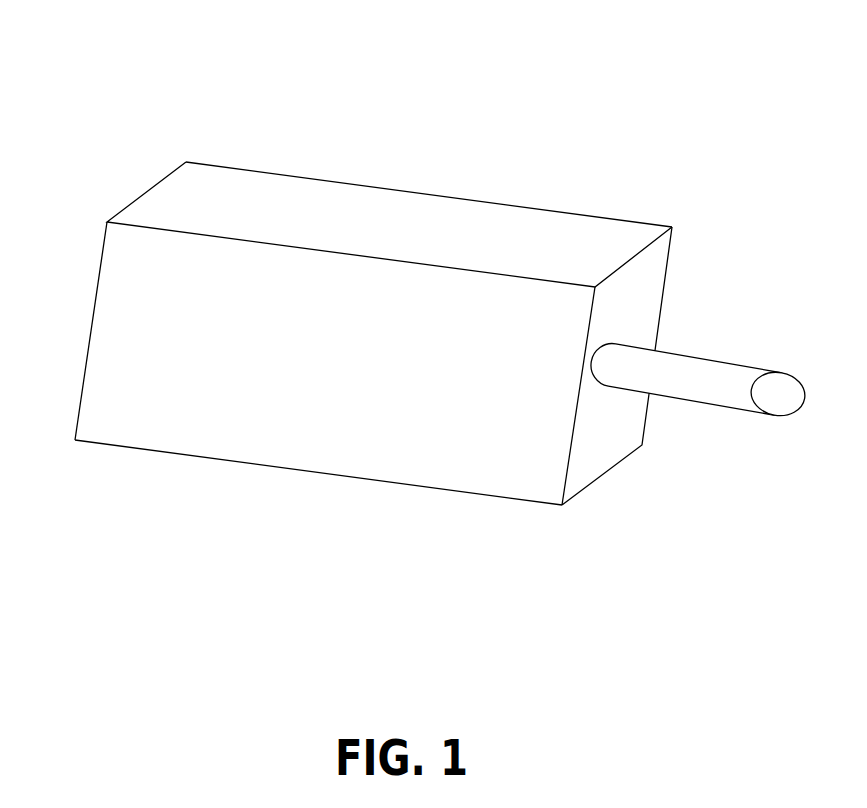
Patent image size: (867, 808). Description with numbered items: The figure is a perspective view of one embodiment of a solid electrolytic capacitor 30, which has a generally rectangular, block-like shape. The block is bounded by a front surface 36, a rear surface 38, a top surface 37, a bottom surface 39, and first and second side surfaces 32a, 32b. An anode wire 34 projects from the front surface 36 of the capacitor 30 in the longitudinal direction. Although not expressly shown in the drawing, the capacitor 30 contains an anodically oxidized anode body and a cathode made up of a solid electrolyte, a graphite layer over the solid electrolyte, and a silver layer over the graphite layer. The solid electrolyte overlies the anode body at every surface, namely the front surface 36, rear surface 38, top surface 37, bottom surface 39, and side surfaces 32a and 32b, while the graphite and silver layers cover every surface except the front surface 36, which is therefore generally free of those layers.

The capacitor 30 is at (513, 108).
The first side surface 32a is at (158, 422).
The second side surface 32b is at (357, 183).
The anode wire 34 is at (725, 362).
The front surface 36 is at (645, 295).
The top surface 37 is at (237, 190).
The rear surface 38 is at (90, 323).
The bottom surface 39 is at (358, 480).